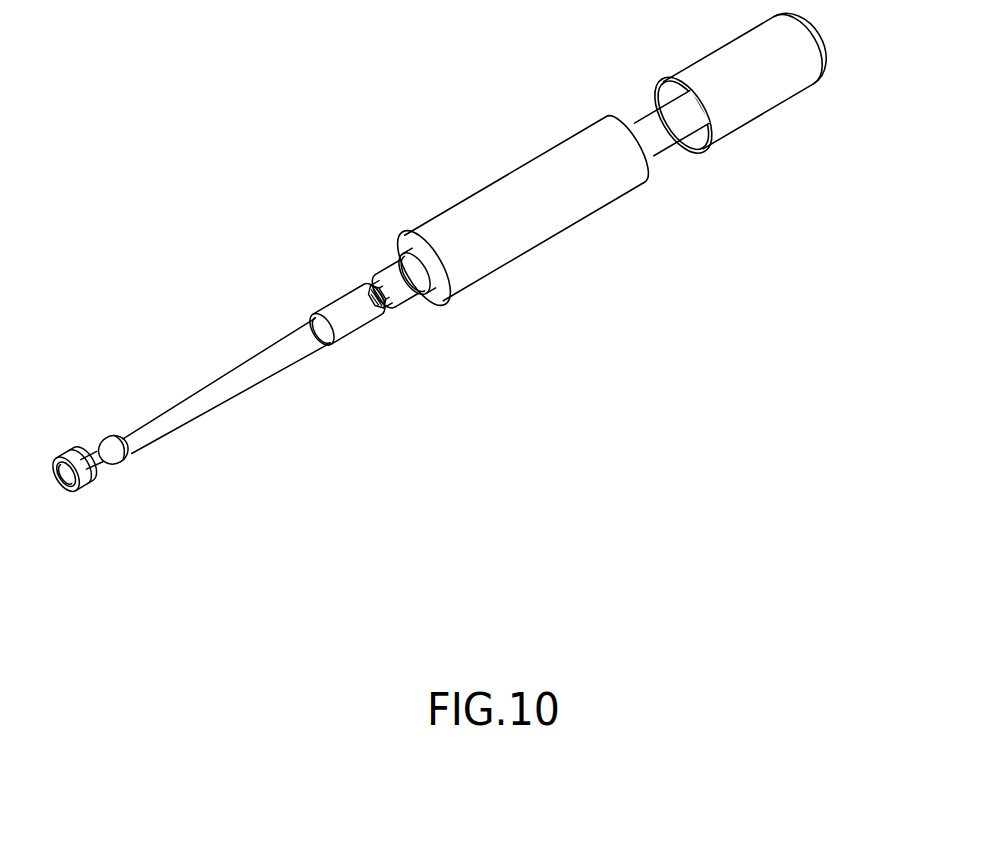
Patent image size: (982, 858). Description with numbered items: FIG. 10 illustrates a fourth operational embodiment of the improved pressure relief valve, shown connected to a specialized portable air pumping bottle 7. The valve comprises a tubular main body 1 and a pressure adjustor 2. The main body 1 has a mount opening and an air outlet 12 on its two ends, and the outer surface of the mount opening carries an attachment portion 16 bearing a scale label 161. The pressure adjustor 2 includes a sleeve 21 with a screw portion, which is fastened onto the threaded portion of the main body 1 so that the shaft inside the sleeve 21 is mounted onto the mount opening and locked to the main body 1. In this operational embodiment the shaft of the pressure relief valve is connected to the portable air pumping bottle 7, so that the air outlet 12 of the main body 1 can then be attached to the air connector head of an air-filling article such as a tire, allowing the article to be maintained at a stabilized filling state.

The tubular main body 1 is at (327, 295).
The air outlet 12 is at (312, 342).
The attachment portion 16 is at (387, 306).
The scale label 161 is at (384, 278).
The pressure adjustor 2 is at (411, 305).
The sleeve 21 is at (428, 294).
The portable air pumping bottle 7 is at (522, 163).